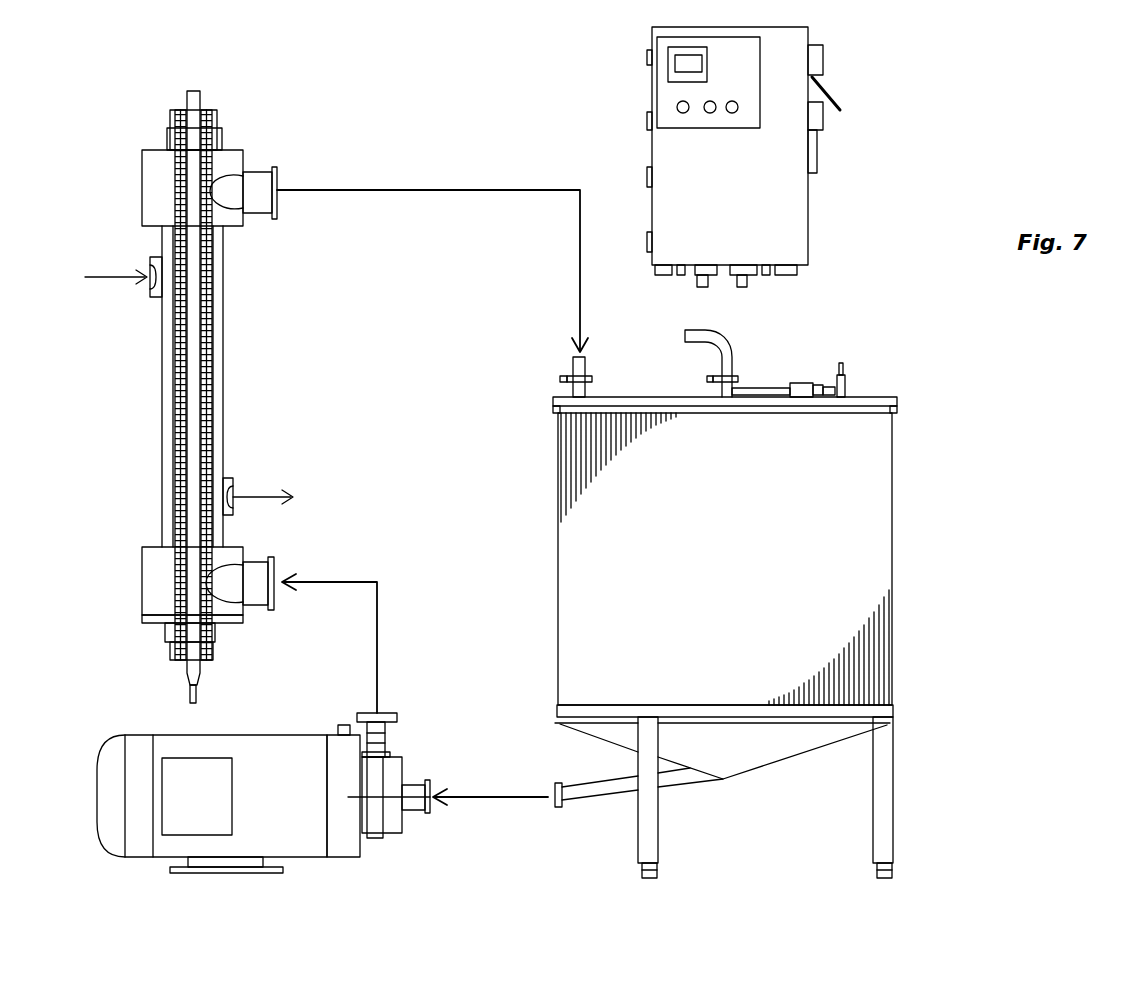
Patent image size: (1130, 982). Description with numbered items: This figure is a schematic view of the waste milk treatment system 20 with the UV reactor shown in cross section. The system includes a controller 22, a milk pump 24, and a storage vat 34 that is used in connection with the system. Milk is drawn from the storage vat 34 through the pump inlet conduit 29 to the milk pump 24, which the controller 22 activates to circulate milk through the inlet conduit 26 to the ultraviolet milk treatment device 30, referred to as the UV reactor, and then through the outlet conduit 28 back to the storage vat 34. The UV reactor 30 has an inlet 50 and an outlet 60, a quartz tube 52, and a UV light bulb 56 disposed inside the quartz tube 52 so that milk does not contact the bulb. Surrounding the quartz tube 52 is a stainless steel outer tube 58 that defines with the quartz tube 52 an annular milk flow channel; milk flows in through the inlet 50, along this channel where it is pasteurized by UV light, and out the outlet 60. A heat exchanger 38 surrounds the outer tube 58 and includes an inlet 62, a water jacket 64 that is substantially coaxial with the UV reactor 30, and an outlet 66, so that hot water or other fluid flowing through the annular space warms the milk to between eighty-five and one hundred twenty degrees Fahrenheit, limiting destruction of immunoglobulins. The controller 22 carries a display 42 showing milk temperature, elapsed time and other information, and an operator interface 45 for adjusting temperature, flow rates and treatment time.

The waste milk treatment system 20 is at (453, 69).
The controller 22 is at (699, 157).
The milk pump 24 is at (263, 793).
The inlet conduit 26 is at (377, 622).
The outlet conduit 28 is at (578, 256).
The pump inlet conduit 29 is at (520, 797).
The ultraviolet milk treatment device 30 is at (208, 392).
The storage vat 34 is at (725, 604).
The heat exchanger 38 is at (149, 314).
The display 42 is at (673, 62).
The operator interface 45 is at (673, 103).
The inlet 50 is at (255, 568).
The quartz tube 52 is at (208, 307).
The UV light bulb 56 is at (193, 262).
The outer tube 58 is at (213, 347).
The outlet 60 is at (260, 183).
The inlet 62 is at (150, 260).
The water jacket 64 is at (167, 427).
The outlet 66 is at (228, 478).